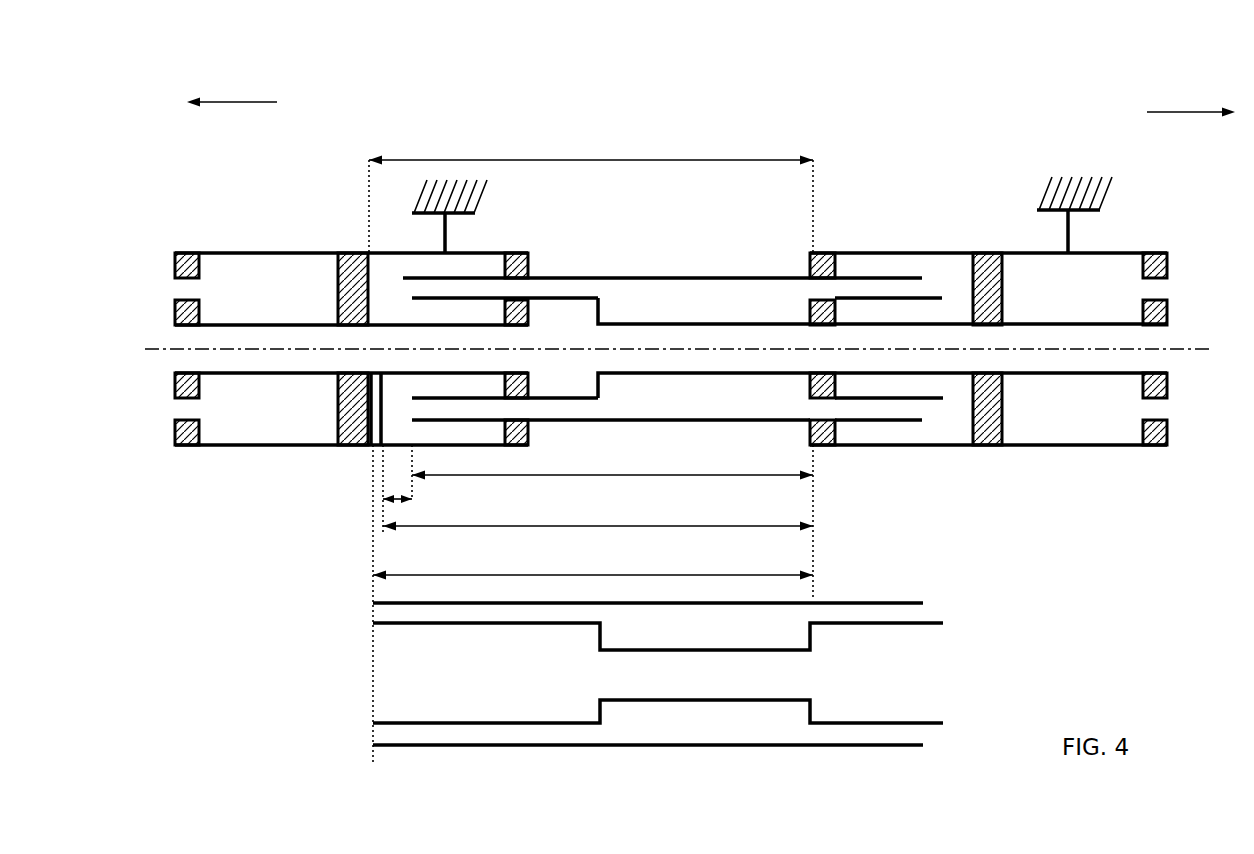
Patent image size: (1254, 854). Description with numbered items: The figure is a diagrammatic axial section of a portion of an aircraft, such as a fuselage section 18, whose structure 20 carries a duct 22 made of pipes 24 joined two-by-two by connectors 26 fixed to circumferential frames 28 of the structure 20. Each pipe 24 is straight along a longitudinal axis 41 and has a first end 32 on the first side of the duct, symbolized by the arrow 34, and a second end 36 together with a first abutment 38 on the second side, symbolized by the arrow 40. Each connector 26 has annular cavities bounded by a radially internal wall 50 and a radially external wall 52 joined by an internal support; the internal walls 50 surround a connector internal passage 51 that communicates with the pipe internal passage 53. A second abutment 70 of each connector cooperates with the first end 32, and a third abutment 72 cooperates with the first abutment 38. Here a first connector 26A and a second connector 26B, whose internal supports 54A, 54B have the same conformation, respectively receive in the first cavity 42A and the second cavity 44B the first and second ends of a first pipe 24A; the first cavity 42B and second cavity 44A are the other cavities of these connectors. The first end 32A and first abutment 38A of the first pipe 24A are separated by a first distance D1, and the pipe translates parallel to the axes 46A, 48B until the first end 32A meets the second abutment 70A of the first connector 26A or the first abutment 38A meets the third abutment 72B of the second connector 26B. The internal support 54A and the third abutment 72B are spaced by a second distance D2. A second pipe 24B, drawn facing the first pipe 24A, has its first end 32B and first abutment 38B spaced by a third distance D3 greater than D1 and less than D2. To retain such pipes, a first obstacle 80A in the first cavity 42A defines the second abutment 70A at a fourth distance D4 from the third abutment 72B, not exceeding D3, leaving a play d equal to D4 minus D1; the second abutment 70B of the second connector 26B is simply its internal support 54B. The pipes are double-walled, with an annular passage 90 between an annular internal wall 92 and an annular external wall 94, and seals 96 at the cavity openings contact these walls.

The fuselage section 18 is at (902, 110).
The structure 20 is at (462, 215).
The duct 22 is at (317, 309).
The pipe 24 is at (876, 288).
The first pipe 24A is at (636, 268).
The second pipe 24B is at (662, 750).
The connector 26 is at (344, 309).
The first connector 26A is at (243, 254).
The second connector 26B is at (1012, 458).
The circumferential frame 28 is at (809, 215).
The first end 32 is at (599, 297).
The first end of the first pipe 32A is at (403, 277).
The first end of the second pipe 32B is at (373, 745).
The first side of the duct 34 is at (238, 103).
The second end 36 is at (943, 400).
The first abutment 38 is at (873, 252).
The first abutment of the first pipe 38A is at (838, 306).
The first abutment of the second pipe 38B is at (812, 641).
The second side of the duct 40 is at (1185, 113).
The longitudinal axis 41 is at (538, 347).
The first cavity of the first connector 42A is at (464, 434).
The first cavity of the second connector 42B is at (1080, 440).
The second cavity of the first connector 44A is at (297, 430).
The second cavity of the second connector 44B is at (863, 433).
The axis of the first cavity of the first connector 46A is at (370, 343).
The axis of the second cavity of the second connector 48B is at (850, 350).
The radially internal wall 50 is at (218, 378).
The connector internal passage 51 is at (292, 336).
The radially external wall 52 is at (213, 438).
The pipe internal passage 53 is at (747, 337).
The internal support of the first connector 54A is at (351, 256).
The internal support of the second connector 54B is at (988, 257).
The second abutment 70 is at (444, 395).
The second abutment of the first connector 70A is at (385, 400).
The second abutment of the second connector 70B is at (1007, 400).
The third abutment 72 is at (755, 409).
The third abutment of the second connector 72B is at (808, 387).
The first obstacle 80A is at (373, 452).
The annular passage 90 is at (777, 297).
The annular internal wall 92 is at (667, 320).
The annular external wall 94 is at (677, 278).
The seal 96 is at (532, 310).
The first distance D1 is at (612, 521).
The second distance D2 is at (591, 195).
The third distance D3 is at (593, 603).
The fourth distance D4 is at (598, 515).
The play in translation d is at (397, 490).